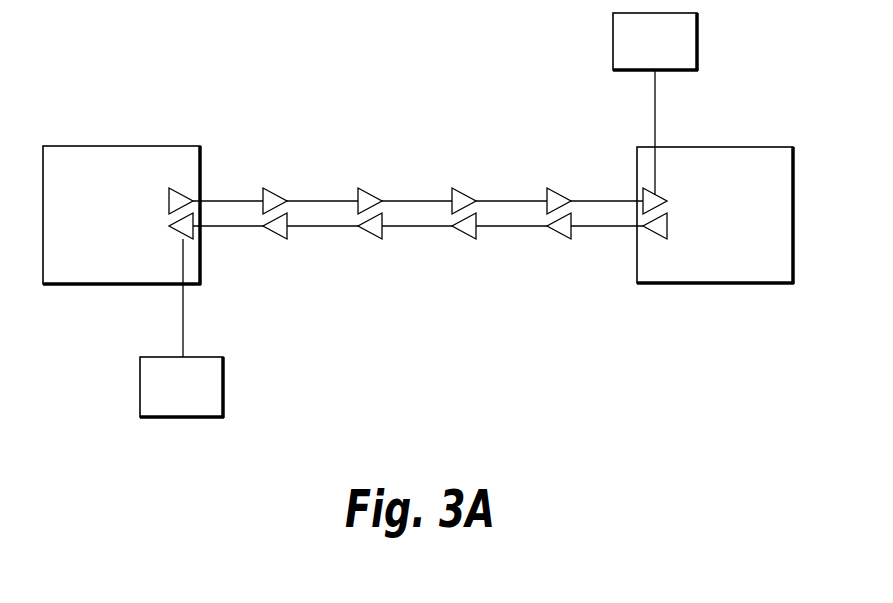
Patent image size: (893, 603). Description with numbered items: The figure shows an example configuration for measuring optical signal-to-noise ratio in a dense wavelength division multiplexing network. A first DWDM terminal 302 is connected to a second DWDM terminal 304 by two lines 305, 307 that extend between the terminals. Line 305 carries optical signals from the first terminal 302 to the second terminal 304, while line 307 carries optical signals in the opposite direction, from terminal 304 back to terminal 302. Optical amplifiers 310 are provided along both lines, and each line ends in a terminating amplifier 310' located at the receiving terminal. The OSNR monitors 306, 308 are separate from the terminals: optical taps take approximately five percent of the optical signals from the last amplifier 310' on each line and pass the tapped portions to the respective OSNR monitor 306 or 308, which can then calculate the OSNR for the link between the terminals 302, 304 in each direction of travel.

The first DWDM terminal 302 is at (81, 249).
The second DWDM terminal 304 is at (698, 249).
The line 305 is at (523, 200).
The OSNR monitor 306 is at (164, 409).
The line 307 is at (493, 229).
The OSNR monitor 308 is at (638, 61).
The optical amplifiers 310 is at (417, 214).
The terminating amplifier 310' is at (418, 213).